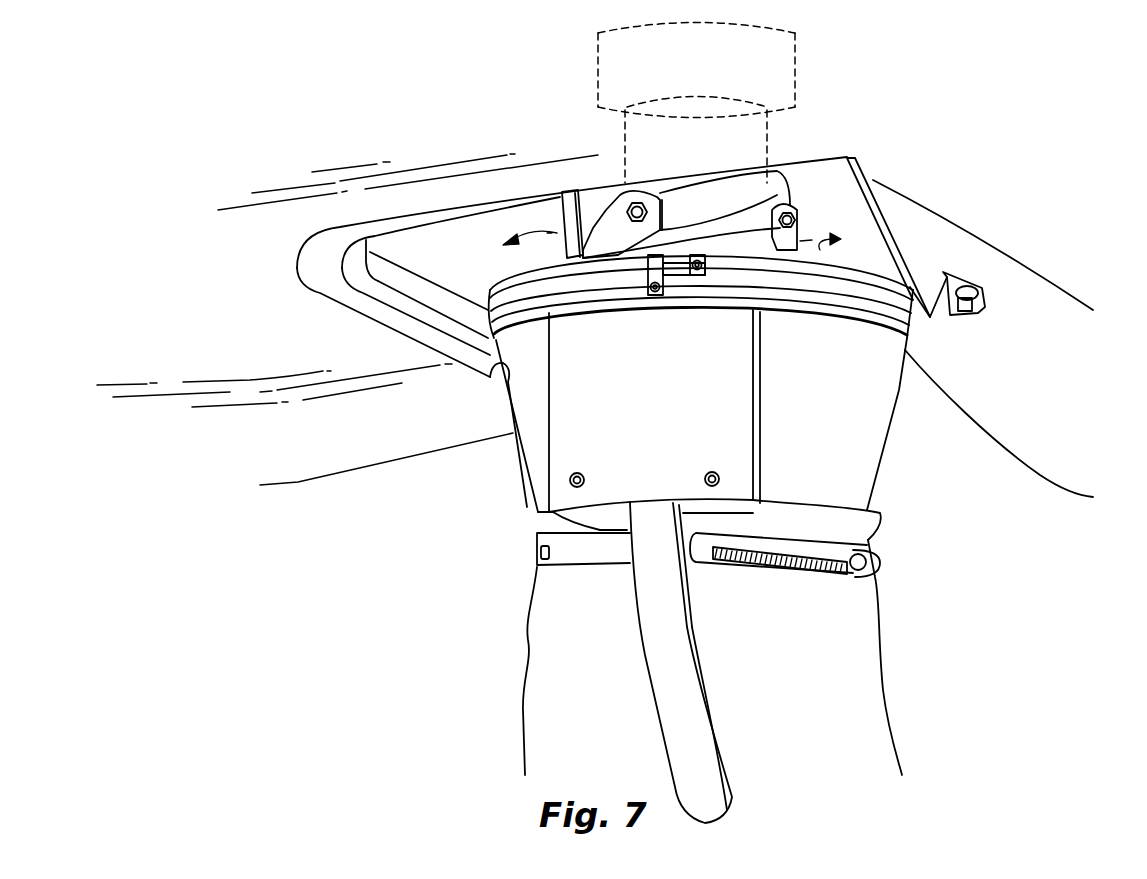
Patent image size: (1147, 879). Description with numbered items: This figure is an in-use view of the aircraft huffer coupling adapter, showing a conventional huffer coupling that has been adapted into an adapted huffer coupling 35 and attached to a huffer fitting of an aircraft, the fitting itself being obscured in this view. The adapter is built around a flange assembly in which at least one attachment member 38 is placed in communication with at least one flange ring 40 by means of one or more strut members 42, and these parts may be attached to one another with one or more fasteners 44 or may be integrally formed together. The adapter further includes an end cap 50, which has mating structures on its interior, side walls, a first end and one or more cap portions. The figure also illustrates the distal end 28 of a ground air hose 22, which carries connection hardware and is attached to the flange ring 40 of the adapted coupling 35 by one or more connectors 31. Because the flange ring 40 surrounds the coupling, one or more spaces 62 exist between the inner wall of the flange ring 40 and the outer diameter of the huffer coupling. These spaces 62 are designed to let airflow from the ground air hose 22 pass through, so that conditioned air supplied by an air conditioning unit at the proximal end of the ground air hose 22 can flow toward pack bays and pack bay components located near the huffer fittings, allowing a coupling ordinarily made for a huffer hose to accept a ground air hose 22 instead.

The ground air hose 22 is at (823, 712).
The distal end 28 is at (897, 345).
The connector 31 is at (683, 270).
The adapted huffer coupling 35 is at (395, 138).
The attachment member 38 is at (728, 213).
The flange ring 40 is at (902, 345).
The strut member 42 is at (562, 214).
The fastener 44 is at (633, 212).
The end cap 50 is at (490, 290).
The space 62 is at (342, 258).